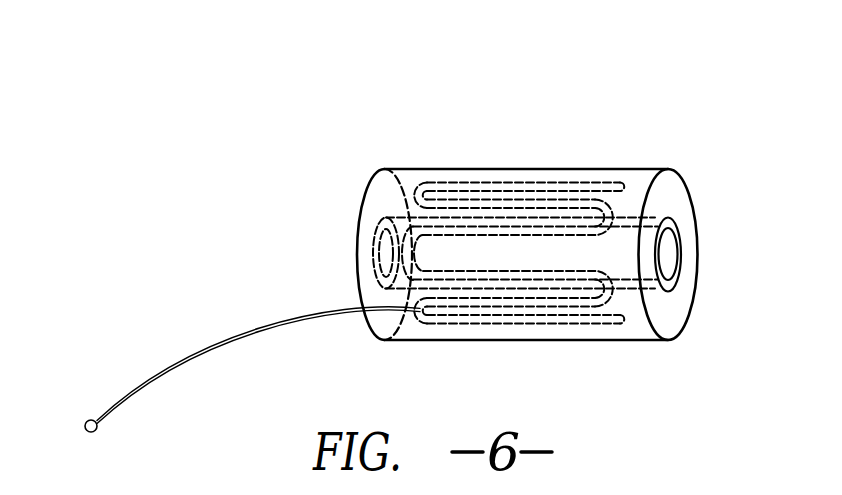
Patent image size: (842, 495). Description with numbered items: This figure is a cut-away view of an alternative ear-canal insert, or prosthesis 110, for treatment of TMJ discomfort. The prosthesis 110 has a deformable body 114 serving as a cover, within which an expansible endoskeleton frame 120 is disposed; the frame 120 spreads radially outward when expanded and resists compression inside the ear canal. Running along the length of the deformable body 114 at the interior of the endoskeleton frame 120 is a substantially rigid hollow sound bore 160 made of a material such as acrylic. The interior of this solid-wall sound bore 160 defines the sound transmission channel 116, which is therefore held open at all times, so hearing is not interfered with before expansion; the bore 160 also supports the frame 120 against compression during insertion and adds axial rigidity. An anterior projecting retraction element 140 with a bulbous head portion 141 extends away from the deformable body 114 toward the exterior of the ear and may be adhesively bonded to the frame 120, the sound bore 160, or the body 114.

The prosthesis 110 is at (527, 197).
The deformable body 114 is at (570, 169).
The endoskeleton frame 120 is at (466, 185).
The sound transmission channel 116 is at (668, 249).
The hollow sound bore 160 is at (675, 290).
The retraction element 140 is at (230, 335).
The bulbous head portion 141 is at (88, 421).